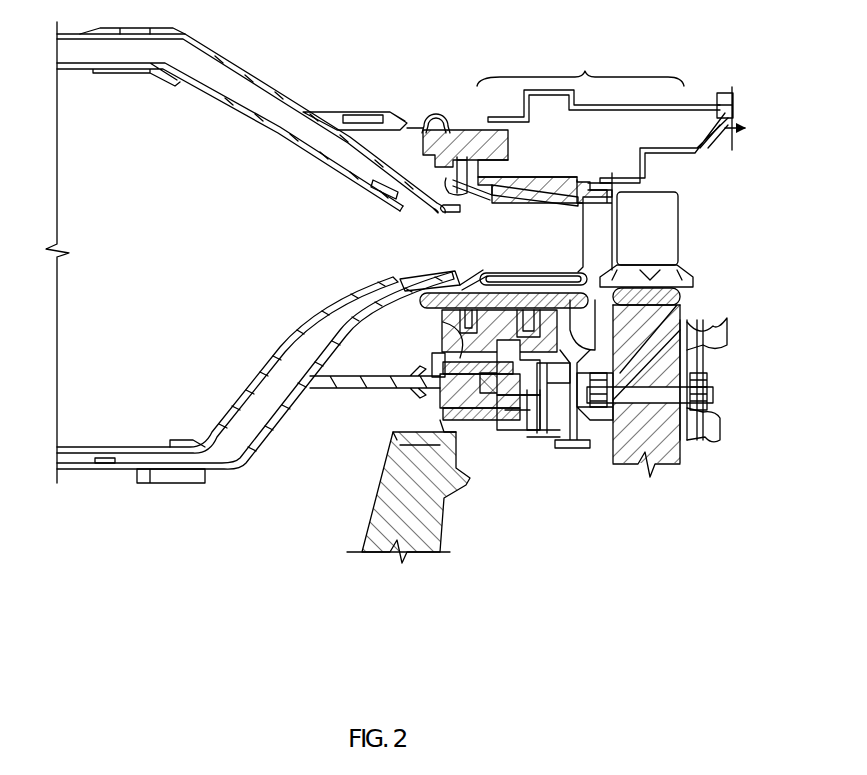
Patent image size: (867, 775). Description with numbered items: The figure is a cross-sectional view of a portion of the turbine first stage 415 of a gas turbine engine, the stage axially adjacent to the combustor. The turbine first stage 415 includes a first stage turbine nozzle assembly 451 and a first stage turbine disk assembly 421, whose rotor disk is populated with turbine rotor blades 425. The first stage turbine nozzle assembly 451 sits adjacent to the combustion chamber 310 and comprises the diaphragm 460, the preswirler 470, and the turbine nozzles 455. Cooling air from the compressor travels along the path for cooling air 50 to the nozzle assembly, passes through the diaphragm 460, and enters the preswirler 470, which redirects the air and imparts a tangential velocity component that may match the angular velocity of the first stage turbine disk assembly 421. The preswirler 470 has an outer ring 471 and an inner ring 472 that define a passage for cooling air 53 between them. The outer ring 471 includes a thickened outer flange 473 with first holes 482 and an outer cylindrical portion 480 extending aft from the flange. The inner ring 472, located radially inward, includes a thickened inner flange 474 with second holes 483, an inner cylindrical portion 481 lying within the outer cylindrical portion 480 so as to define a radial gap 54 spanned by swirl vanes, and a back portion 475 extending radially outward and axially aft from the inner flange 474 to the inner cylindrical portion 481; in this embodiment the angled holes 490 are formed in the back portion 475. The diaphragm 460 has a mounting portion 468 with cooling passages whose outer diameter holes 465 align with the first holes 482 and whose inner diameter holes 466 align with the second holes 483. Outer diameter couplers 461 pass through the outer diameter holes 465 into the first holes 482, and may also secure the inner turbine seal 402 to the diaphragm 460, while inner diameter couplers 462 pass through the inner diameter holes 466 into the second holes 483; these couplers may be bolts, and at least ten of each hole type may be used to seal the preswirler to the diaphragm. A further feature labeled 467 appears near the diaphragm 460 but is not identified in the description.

The combustion chamber 310 is at (180, 114).
The turbine first stage 415 is at (611, 114).
The turbine nozzles 455 is at (508, 216).
The first stage turbine nozzle assembly 451 is at (462, 197).
The outer flange 473 is at (462, 284).
The passage for cooling air 53 is at (485, 268).
The outer ring 471 is at (522, 315).
The outer cylindrical portion 480 is at (583, 297).
The turbine rotor blades 425 is at (676, 212).
The first stage turbine disk assembly 421 is at (691, 265).
The radial gap 54 is at (690, 278).
The inner cylindrical portion 481 is at (682, 308).
The first holes 482 is at (444, 324).
The outer diameter holes 465 is at (446, 343).
The outer diameter couplers 461 is at (431, 367).
The inner turbine seal 402 is at (365, 386).
The path for cooling air 50 is at (320, 447).
The mounting portion 468 is at (442, 410).
The inner diameter couplers 462 is at (440, 433).
The surface 467 is at (395, 467).
The diaphragm 460 is at (365, 509).
The inner diameter holes 466 is at (431, 445).
The second holes 483 is at (503, 414).
The angled holes 490 is at (520, 432).
The inner flange 474 is at (572, 432).
The back portion 475 is at (596, 442).
The preswirler 470 is at (584, 442).
The inner ring 472 is at (660, 445).